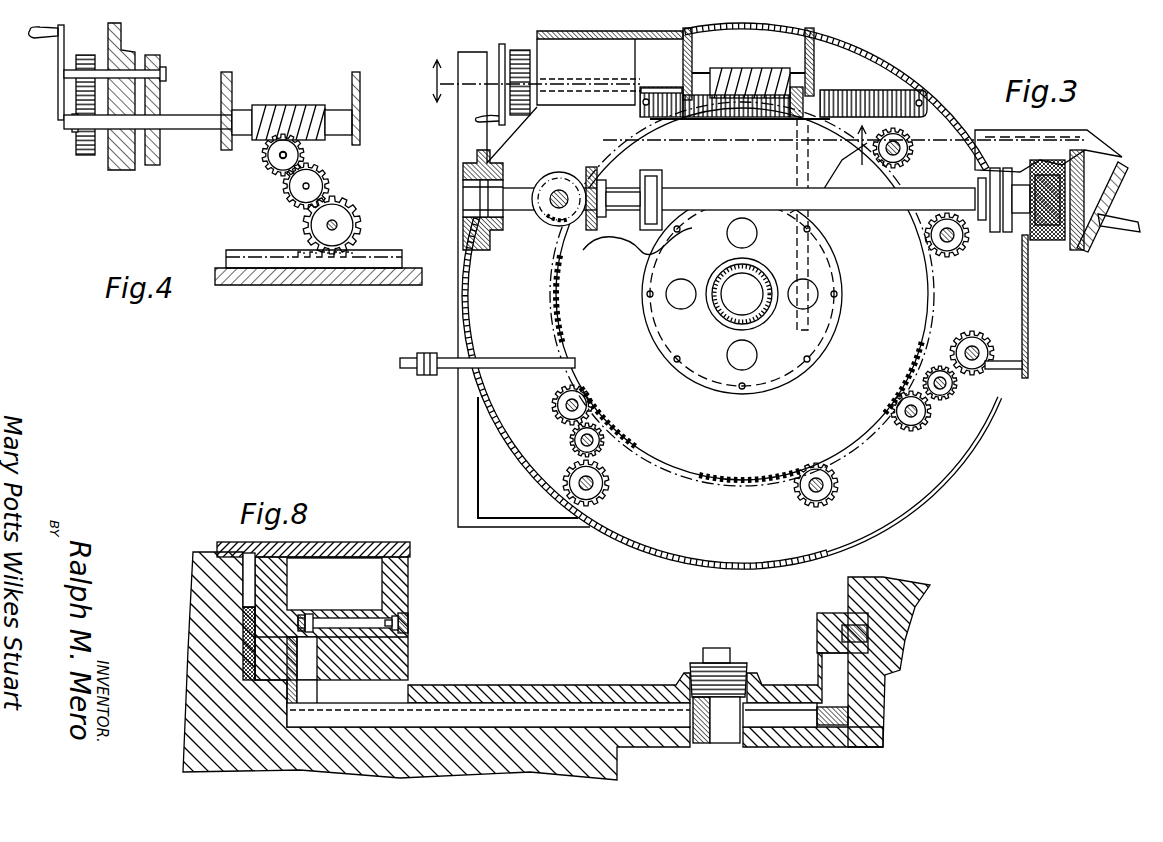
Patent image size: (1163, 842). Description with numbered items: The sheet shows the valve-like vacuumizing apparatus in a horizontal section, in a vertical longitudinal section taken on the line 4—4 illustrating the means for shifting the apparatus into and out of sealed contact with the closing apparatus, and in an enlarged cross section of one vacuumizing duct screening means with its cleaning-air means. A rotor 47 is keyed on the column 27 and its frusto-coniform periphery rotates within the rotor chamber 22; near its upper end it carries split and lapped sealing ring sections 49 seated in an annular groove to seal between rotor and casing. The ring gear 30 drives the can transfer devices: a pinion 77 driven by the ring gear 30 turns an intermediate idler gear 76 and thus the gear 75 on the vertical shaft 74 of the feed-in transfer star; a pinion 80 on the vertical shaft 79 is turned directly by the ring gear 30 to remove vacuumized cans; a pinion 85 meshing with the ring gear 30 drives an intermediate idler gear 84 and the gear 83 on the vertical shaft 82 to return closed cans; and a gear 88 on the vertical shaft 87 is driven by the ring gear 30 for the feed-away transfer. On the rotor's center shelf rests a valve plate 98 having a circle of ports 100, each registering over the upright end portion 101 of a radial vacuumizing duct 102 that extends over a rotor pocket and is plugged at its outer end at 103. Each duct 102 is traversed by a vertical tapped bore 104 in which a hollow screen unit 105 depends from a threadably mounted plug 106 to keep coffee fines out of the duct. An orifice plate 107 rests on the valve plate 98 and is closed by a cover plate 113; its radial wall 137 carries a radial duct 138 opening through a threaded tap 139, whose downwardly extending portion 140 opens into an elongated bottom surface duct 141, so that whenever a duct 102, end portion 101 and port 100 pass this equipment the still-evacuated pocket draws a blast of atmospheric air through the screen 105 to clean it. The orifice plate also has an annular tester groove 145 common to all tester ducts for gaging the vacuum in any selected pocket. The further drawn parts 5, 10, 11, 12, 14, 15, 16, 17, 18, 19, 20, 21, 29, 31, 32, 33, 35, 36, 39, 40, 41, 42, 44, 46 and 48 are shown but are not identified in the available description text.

In FIG. 3, the section line 4 is at (648, 122).
In FIG. 4, the base table 5 is at (318, 278).
In FIG. 4, the rack 10 is at (360, 258).
In FIG. 3, the rack 10 is at (905, 118).
In FIG. 4, the pinion gear 11 is at (348, 222).
In FIG. 3, the pinion gear 11 is at (830, 112).
In FIG. 4, the pinion shaft 12 is at (336, 222).
In FIG. 3, the pinion shaft 12 is at (812, 322).
In FIG. 4, the gear 14 is at (306, 158).
In FIG. 3, the gear 14 is at (760, 118).
In FIG. 4, the vertical bar 15 is at (278, 160).
In FIG. 3, the vertical bar 15 is at (1028, 300).
In FIG. 4, the worm wheel 16 is at (263, 153).
In FIG. 3, the worm wheel 16 is at (790, 78).
In FIG. 4, the worm 17 is at (300, 108).
In FIG. 3, the worm 17 is at (745, 72).
In FIG. 4, the shaft 18 is at (180, 118).
In FIG. 3, the shaft 18 is at (660, 80).
In FIG. 4, the hand crank 19 is at (58, 52).
In FIG. 3, the hand crank 19 is at (500, 46).
In FIG. 4, the gear 20 is at (76, 128).
In FIG. 3, the gear 20 is at (510, 92).
In FIG. 8, the frame block 21 is at (880, 645).
In FIG. 8, the rotor chamber 22 is at (886, 675).
In FIG. 3, the column 27 is at (722, 316).
In FIG. 3, the disc plate 29 is at (816, 268).
In FIG. 3, the ring gear 30 is at (566, 296).
In FIG. 3, the bolts 31 is at (745, 386).
In FIG. 3, the gear 32 is at (548, 218).
In FIG. 3, the shaft hub 33 is at (553, 192).
In FIG. 3, the gear cover 35 is at (562, 172).
In FIG. 3, the flange 36 is at (592, 170).
In FIG. 3, the coupling 39 is at (630, 180).
In FIG. 3, the shaft 40 is at (740, 186).
In FIG. 3, the hand wheel 41 is at (1090, 178).
In FIG. 3, the handle 42 is at (1112, 232).
In FIG. 3, the shaft 44 is at (528, 346).
In FIG. 3, the collar 46 is at (982, 178).
In FIG. 8, the rotor 47 is at (200, 733).
In FIG. 8, the key 48 is at (842, 631).
In FIG. 8, the sealing ring sections 49 is at (830, 648).
In FIG. 3, the vertical shaft 74 is at (594, 480).
In FIG. 3, the gear 75 is at (598, 492).
In FIG. 3, the intermediate idler gear 76 is at (570, 444).
In FIG. 3, the pinion 77 is at (552, 410).
In FIG. 3, the vertical shaft 79 is at (940, 237).
In FIG. 3, the pinion 80 is at (962, 245).
In FIG. 3, the vertical shaft 82 is at (976, 350).
In FIG. 3, the gear 83 is at (970, 336).
In FIG. 3, the intermediate idler gear 84 is at (950, 392).
In FIG. 3, the pinion 85 is at (914, 430).
In FIG. 3, the vertical shaft 87 is at (822, 482).
In FIG. 3, the gear 88 is at (836, 488).
In FIG. 8, the valve plate 98 is at (395, 644).
In FIG. 8, the ports 100 is at (318, 656).
In FIG. 8, the upright end portion 101 is at (318, 690).
In FIG. 8, the radial vacuumizing duct 102 is at (492, 702).
In FIG. 8, the plug 103 is at (795, 710).
In FIG. 8, the vertical tapped bore 104 is at (697, 730).
In FIG. 8, the hollow screen unit 105 is at (716, 720).
In FIG. 8, the threadably mounted plug 106 is at (700, 664).
In FIG. 8, the orifice plate 107 is at (404, 600).
In FIG. 8, the cover plate 113 is at (322, 548).
In FIG. 8, the radial wall 137 is at (360, 600).
In FIG. 8, the radial duct 138 is at (352, 618).
In FIG. 8, the threaded tap 139 is at (408, 614).
In FIG. 8, the downwardly extending portion 140 is at (316, 618).
In FIG. 8, the elongated bottom surface duct 141 is at (303, 616).
In FIG. 8, the annular tester groove 145 is at (406, 626).